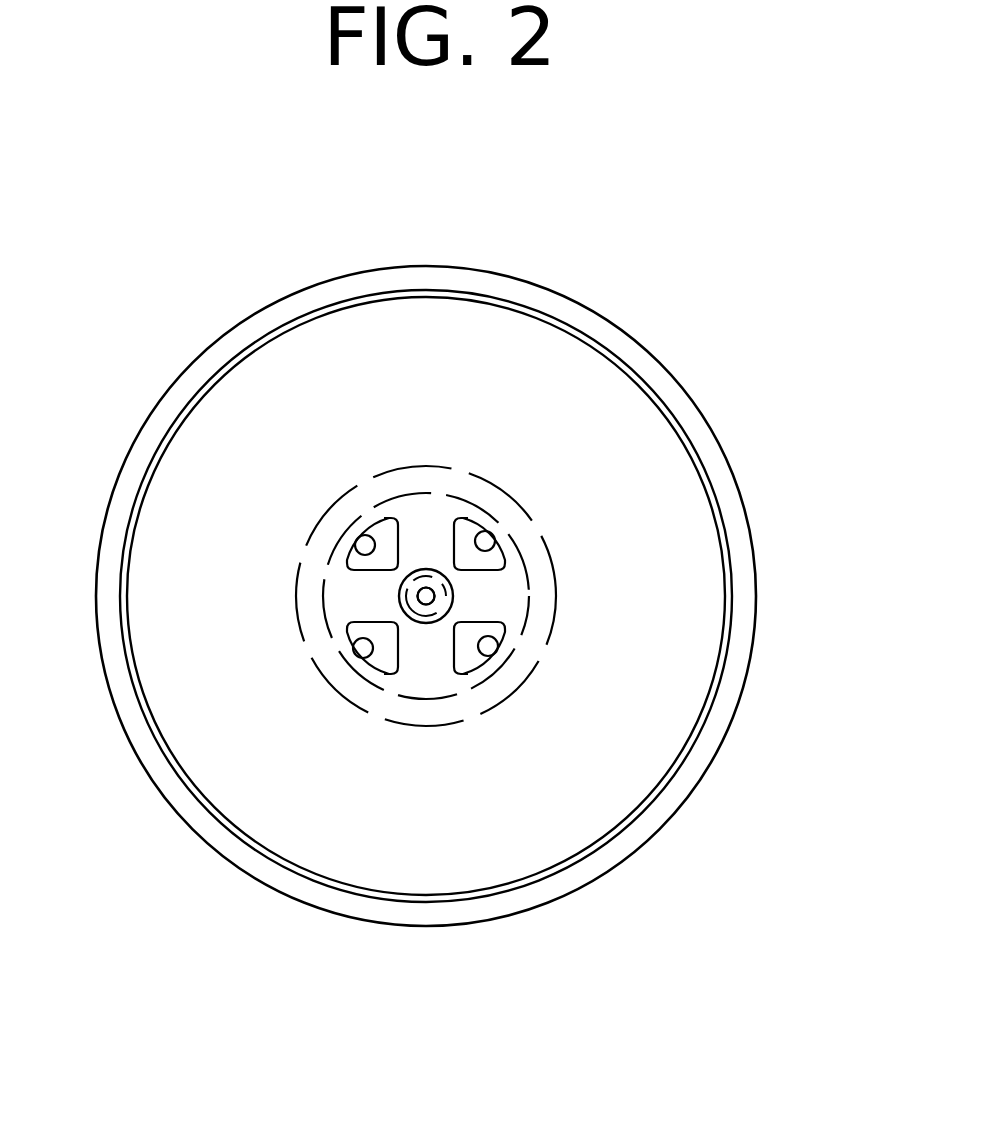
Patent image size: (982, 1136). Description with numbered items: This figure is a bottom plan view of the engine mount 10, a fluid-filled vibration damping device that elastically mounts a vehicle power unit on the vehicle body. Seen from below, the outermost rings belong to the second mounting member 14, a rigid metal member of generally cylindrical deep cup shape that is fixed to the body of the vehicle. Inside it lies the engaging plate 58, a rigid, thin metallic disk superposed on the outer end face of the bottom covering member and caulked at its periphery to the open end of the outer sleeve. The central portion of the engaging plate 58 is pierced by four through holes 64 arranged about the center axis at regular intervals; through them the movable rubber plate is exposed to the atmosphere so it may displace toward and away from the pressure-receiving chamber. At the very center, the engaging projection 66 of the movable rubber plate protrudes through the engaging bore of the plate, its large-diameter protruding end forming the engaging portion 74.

The engine mount 10 is at (294, 238).
The second mounting member 14 is at (712, 413).
The engaging plate 58 is at (513, 840).
The through holes 64 is at (494, 545).
The engaging projection 66 is at (442, 591).
The engaging portion 74 is at (426, 596).